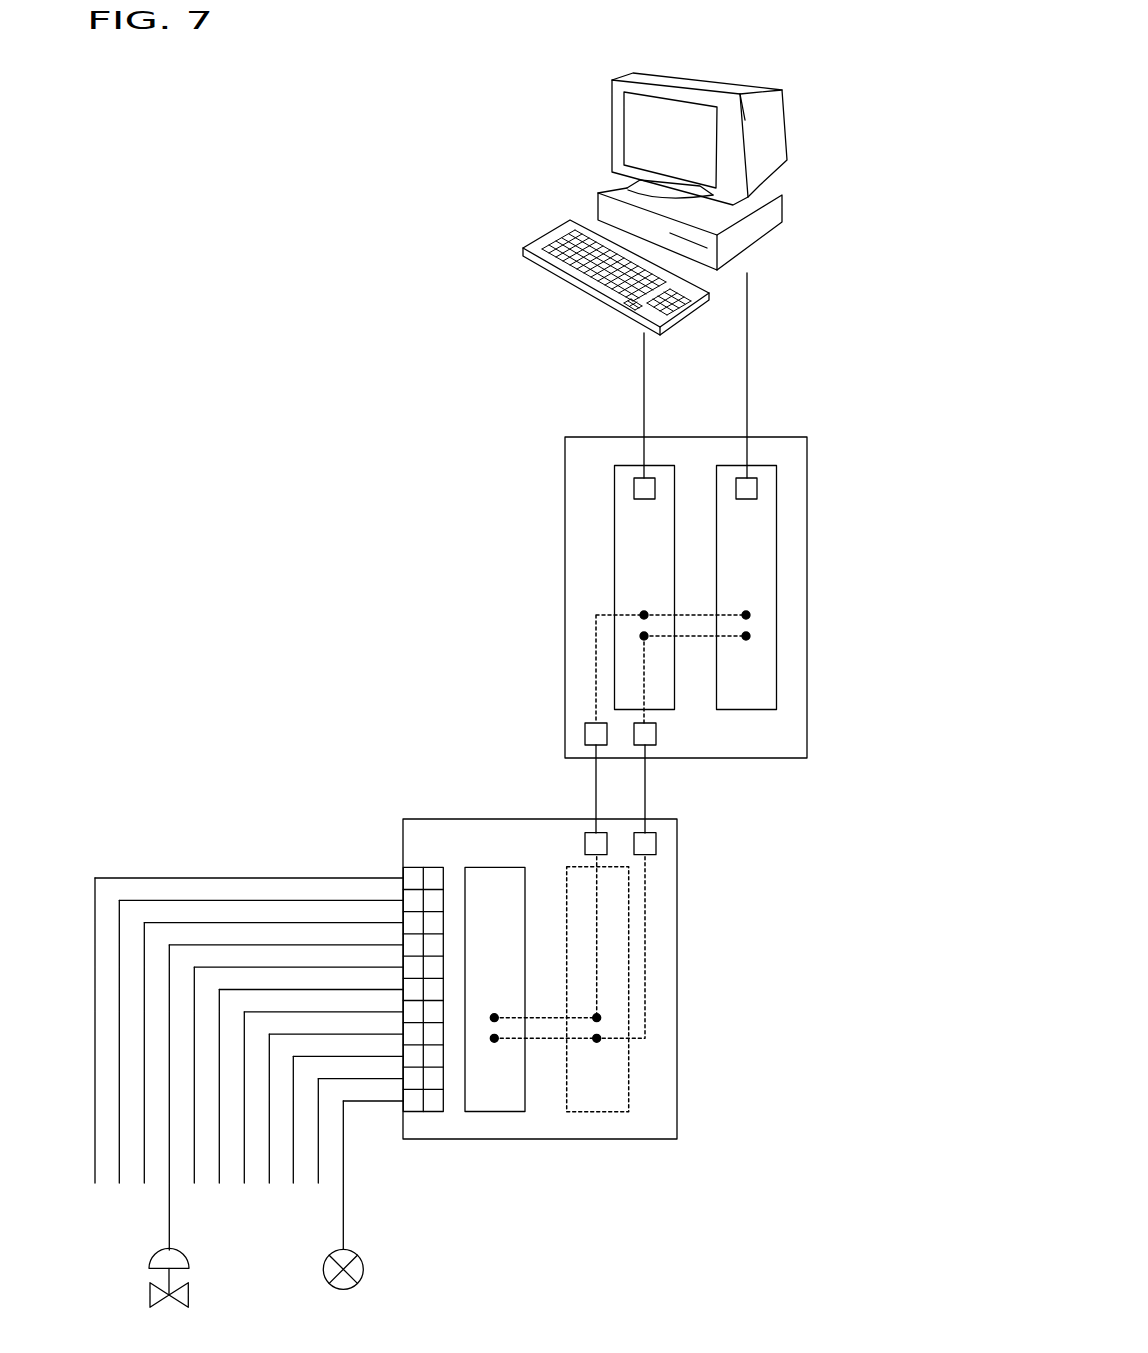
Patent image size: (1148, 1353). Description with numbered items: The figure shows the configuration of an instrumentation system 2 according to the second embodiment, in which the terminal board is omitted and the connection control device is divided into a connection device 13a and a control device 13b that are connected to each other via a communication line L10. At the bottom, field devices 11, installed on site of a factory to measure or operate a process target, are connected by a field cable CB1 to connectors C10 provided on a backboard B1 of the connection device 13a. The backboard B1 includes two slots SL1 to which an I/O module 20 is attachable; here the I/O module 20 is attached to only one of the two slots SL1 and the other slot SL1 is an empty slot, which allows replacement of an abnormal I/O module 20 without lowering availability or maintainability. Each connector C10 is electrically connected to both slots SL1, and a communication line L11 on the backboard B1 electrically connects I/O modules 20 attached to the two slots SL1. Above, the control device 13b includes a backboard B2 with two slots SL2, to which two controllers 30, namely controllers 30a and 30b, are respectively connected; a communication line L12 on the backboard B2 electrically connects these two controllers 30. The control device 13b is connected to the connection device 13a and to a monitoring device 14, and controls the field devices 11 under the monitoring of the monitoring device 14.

The instrumentation system 2 is at (263, 132).
The monitoring device 14 is at (735, 78).
The controller 30 is at (772, 375).
The controller 30a is at (758, 464).
The controller 30b is at (657, 464).
The control device 13b is at (686, 619).
The backboard B2 is at (807, 629).
The slot SL2 is at (765, 518).
The communication line L12 is at (693, 602).
The communication line L10 is at (585, 797).
The connection device 13a is at (564, 981).
The backboard B1 is at (677, 988).
The connector C10 is at (423, 860).
The I/O module 20 is at (493, 866).
The slot SL1 is at (617, 1082).
The communication line L11 is at (545, 1008).
The field cable CB1 is at (169, 1217).
The field device 11 is at (189, 1295).